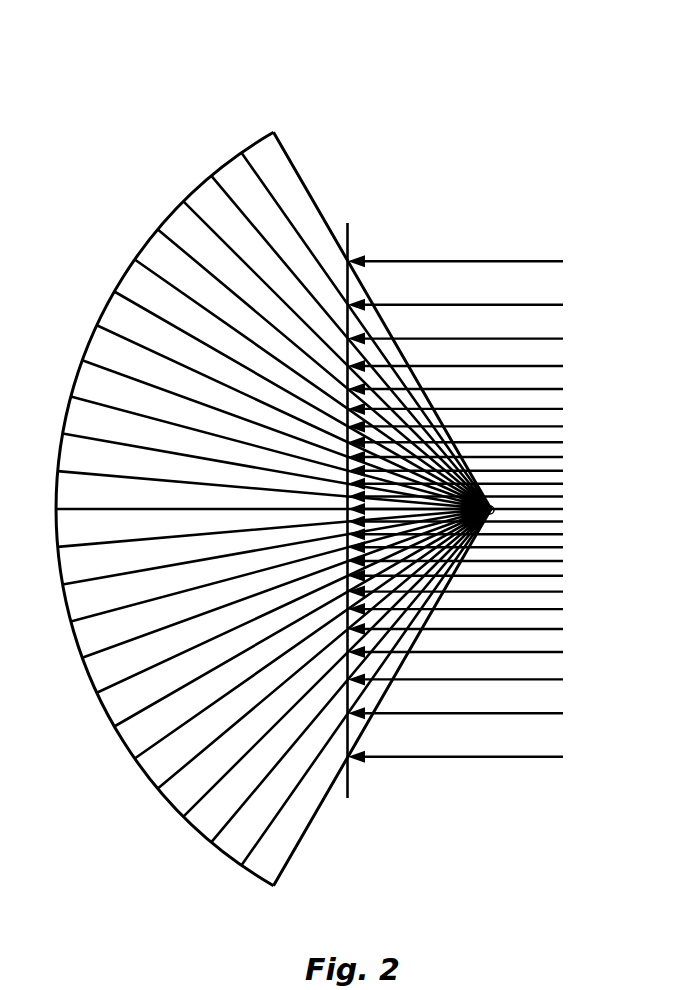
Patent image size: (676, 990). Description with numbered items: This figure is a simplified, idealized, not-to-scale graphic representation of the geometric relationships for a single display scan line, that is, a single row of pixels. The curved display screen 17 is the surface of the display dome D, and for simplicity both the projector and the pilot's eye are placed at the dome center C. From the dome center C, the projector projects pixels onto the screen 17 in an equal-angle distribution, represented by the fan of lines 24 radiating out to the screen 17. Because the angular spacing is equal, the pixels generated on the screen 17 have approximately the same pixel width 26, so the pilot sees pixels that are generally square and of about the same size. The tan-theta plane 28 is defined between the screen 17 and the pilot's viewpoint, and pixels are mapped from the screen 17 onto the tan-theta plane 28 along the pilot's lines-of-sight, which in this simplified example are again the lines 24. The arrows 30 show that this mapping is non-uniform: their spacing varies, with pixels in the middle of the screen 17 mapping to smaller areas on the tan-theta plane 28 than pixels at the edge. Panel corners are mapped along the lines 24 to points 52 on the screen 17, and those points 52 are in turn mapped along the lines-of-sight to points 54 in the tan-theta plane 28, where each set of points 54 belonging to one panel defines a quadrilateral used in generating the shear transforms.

The display screen 17 is at (100, 311).
The lines 24 is at (304, 234).
The pixel width 26 is at (243, 152).
The tan-theta plane 28 is at (349, 783).
The arrows 30 is at (545, 304).
The points on the screen 52 is at (250, 150).
The points in the tan-theta plane 54 is at (347, 304).
The dome center C is at (494, 507).
The display dome D is at (524, 92).